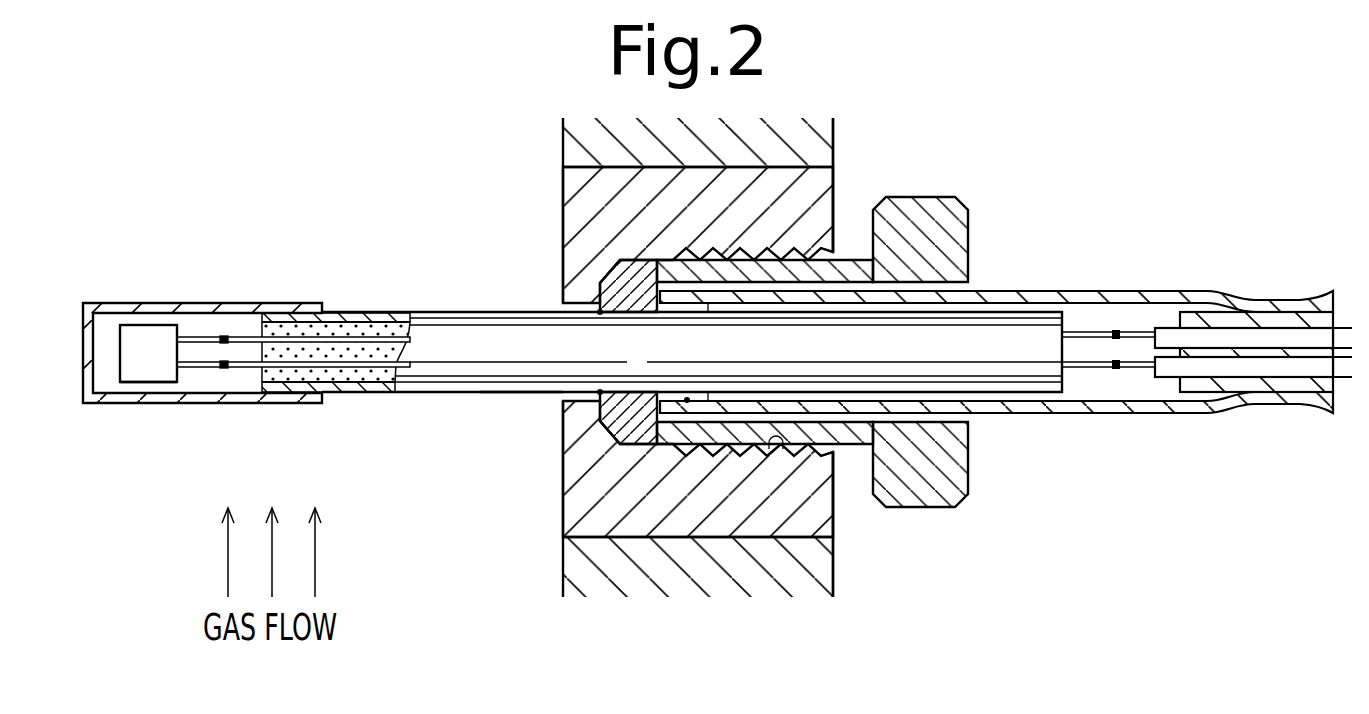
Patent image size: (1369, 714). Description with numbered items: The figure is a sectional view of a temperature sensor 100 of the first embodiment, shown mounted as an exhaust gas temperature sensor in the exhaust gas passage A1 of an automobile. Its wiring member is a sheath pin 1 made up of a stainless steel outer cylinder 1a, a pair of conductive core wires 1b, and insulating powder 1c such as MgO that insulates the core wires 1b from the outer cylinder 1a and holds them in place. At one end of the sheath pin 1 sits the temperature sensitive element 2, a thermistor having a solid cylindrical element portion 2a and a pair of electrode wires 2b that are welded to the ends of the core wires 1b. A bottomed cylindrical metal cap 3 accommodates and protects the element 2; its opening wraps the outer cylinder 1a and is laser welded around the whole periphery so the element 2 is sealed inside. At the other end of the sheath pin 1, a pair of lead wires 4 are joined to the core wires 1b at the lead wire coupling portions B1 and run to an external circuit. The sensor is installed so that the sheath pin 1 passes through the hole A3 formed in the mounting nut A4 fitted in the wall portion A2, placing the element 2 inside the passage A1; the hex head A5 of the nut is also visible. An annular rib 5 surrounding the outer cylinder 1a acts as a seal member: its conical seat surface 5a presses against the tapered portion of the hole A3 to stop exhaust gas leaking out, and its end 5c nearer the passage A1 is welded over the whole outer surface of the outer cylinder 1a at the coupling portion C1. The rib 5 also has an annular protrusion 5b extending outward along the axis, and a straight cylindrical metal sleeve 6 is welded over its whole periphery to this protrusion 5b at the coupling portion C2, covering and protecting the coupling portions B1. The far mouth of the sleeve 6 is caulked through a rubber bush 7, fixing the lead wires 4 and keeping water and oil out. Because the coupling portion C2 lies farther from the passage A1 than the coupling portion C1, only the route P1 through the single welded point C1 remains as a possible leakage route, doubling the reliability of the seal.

The temperature sensor 100 is at (368, 267).
The sheath pin 1 is at (458, 338).
The outer cylinder 1a is at (386, 392).
The core wires 1b is at (257, 336).
The insulating powder 1c is at (337, 352).
The temperature sensitive element 2 is at (147, 347).
The element portion 2a is at (133, 382).
The electrode wires 2b is at (198, 336).
The metal cap 3 is at (107, 305).
The lead wires 4 is at (1341, 328).
The rib 5 is at (646, 281).
The seat surface 5a is at (610, 268).
The annular protrusion 5b is at (665, 396).
The end of the rib 5c is at (600, 312).
The sleeve 6 is at (1072, 290).
The rubber bush 7 is at (1238, 312).
The exhaust gas passage A1 is at (503, 518).
The wall portion A2 is at (817, 568).
The hole A3 is at (833, 502).
The mounting nut A4 is at (818, 515).
The hexagonal head A5 is at (917, 242).
The lead wire coupling portions B1 is at (1116, 331).
The coupling portion C1 is at (593, 402).
The coupling portion C2 is at (687, 400).
The route P1 is at (549, 399).